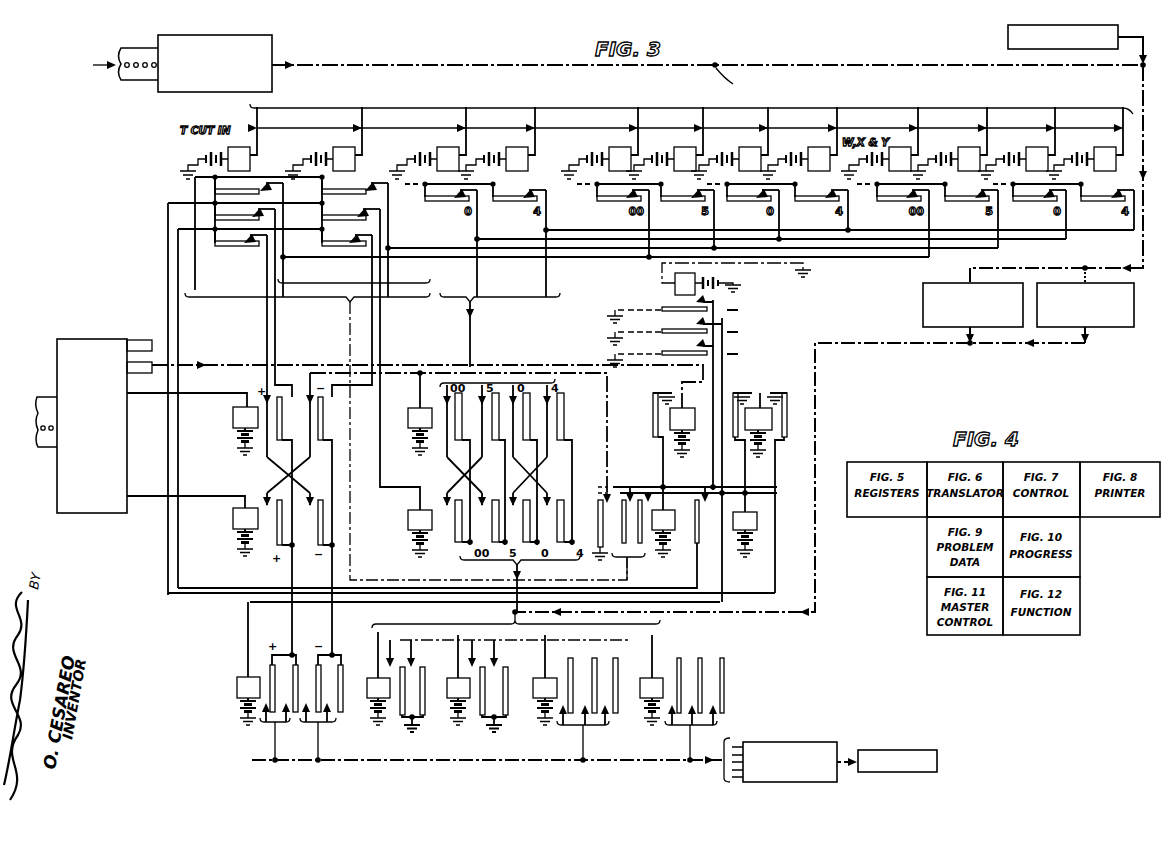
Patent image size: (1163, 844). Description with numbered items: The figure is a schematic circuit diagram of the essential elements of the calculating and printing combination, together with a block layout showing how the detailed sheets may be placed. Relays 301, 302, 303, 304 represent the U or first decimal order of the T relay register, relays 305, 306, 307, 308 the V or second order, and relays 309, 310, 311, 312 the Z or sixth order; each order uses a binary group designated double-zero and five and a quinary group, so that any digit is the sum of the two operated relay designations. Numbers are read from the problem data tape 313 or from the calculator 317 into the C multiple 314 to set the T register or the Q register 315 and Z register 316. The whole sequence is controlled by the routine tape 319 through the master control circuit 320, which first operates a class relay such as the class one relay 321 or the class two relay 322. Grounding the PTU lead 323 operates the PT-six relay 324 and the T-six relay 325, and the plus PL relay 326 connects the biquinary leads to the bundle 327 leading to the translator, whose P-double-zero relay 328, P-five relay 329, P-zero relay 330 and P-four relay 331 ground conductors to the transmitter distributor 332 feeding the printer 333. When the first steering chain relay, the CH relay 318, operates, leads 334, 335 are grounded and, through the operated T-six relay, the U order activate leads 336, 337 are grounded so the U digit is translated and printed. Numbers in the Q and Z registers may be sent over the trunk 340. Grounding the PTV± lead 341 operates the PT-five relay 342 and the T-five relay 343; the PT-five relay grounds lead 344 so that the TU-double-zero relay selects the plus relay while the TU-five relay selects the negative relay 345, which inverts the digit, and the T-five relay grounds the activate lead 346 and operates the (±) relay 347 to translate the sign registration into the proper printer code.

The TU00 relay 301 is at (228, 148).
The TU5 relay 302 is at (333, 148).
The U order relay of the T register 303 is at (437, 148).
The U order relay of the T register 304 is at (512, 141).
The V order relay of the T register 305 is at (609, 148).
The V order relay of the T register 306 is at (678, 141).
The V order relay of the T register 307 is at (742, 141).
The V order relay of the T register 308 is at (808, 150).
The Z order relay of the T register 309 is at (889, 169).
The Z order relay of the T register 310 is at (960, 149).
The Z order relay of the T register 311 is at (1028, 149).
The Z order relay of the T register 312 is at (1108, 146).
The problem data tape 313 is at (135, 82).
The C multiple 314 is at (592, 68).
The Q register 315 is at (940, 283).
The Z register 316 is at (1072, 283).
The calculator 317 is at (1008, 36).
The CH-1 relay 318 is at (675, 284).
The master or routine tape 319 is at (38, 440).
The master control circuit 320 is at (72, 513).
The CL-1 relay 321 is at (233, 518).
The CL-2 relay 322 is at (233, 417).
The PTU lead 323 is at (150, 348).
The PT-6 relay 324 is at (660, 440).
The T6 relay 325 is at (684, 510).
The plus PL relay 326 is at (412, 408).
The bundle of biquinary leads 327 is at (510, 602).
The P00 relay 328 is at (372, 680).
The P5 relay 329 is at (452, 680).
The P0 relay 330 is at (538, 680).
The P4 relay 331 is at (646, 680).
The transmitter distributor 332 is at (766, 741).
The printer 333 is at (866, 750).
The lead 334 is at (777, 487).
The lead 335 is at (777, 493).
The U order activate lead 336 is at (195, 290).
The U order activate lead 337 is at (430, 283).
The trunk 340 is at (815, 455).
The PTV± lead 341 is at (150, 374).
The PT5 relay 342 is at (775, 442).
The T5 relay 343 is at (757, 525).
The lead 344 is at (775, 570).
The negative relay 345 is at (408, 520).
The activate lead 346 is at (697, 574).
The (±) relay 347 is at (237, 687).